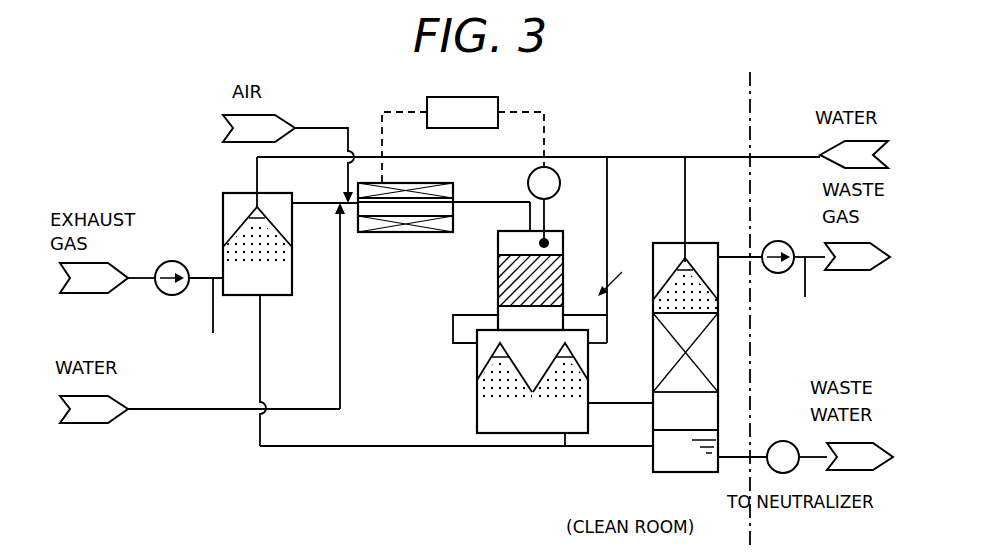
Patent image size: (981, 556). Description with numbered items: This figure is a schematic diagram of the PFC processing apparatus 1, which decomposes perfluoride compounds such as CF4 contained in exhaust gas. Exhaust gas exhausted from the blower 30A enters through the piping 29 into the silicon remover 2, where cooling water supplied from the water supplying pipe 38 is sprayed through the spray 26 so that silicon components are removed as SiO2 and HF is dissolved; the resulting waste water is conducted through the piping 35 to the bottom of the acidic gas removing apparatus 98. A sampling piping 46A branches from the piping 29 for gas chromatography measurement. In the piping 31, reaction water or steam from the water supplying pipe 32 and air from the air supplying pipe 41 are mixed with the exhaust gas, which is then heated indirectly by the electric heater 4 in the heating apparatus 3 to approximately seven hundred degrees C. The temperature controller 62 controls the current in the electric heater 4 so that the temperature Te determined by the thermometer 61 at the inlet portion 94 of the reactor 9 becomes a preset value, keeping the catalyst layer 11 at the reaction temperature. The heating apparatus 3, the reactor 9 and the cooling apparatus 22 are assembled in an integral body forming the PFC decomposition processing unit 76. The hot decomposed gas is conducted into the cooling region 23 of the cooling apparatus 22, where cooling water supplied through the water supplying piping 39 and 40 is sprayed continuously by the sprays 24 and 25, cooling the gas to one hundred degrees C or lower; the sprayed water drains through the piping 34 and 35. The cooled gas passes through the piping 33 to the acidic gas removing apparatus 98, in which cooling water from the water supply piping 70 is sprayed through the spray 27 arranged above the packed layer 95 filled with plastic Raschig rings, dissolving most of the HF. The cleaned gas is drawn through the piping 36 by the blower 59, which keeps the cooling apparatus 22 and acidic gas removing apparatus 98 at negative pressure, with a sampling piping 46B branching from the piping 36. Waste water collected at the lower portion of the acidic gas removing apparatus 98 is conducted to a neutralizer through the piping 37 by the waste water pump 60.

The PFC processing apparatus 1 is at (333, 463).
The silicon remover 2 is at (230, 193).
The heating apparatus 3 is at (455, 201).
The electric heater 4 is at (405, 235).
The reactor 9 is at (563, 262).
The catalyst layer 11 is at (498, 275).
The cooling apparatus 22 is at (503, 436).
The cooling region 23 is at (483, 410).
The spray 24 is at (570, 347).
The spray 25 is at (494, 347).
The spray 26 is at (270, 206).
The spray 27 is at (684, 252).
The piping 29 is at (205, 287).
The blower 30A is at (166, 261).
The piping 31 is at (310, 207).
The water supplying pipe 32 is at (204, 412).
The piping 33 is at (610, 405).
The piping 34 is at (566, 448).
The piping 35 is at (263, 368).
The piping 36 is at (740, 255).
The piping 37 is at (735, 459).
The water supplying pipe 38 is at (583, 155).
The water supplying piping 39 is at (608, 203).
The water supplying piping 40 is at (453, 322).
The air supplying pipe 41 is at (312, 127).
The sampling piping 46A is at (215, 326).
The sampling piping 46B is at (808, 292).
The blower 59 is at (783, 240).
The waste water pump 60 is at (784, 440).
The thermometer 61 is at (558, 190).
The temperature controller 62 is at (505, 112).
The water supply piping 70 is at (688, 185).
The PFC decomposition processing unit 76 is at (622, 274).
The inlet portion 94 is at (500, 243).
The packed layer 95 is at (712, 334).
The acidic gas removing apparatus 98 is at (720, 403).